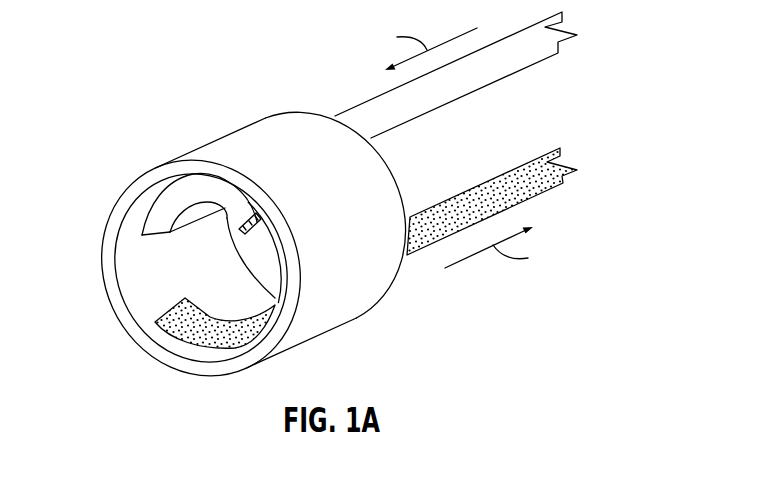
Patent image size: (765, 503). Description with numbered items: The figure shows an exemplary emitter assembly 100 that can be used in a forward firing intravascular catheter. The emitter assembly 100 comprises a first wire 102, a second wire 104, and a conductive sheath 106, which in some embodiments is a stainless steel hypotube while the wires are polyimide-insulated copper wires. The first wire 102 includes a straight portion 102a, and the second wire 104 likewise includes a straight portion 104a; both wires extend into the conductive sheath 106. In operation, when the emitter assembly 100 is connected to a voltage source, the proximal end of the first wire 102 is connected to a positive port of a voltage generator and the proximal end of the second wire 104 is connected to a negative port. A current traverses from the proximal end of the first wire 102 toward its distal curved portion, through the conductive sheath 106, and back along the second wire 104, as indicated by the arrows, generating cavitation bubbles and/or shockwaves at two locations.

The emitter assembly 100 is at (146, 89).
The first wire 102 is at (543, 58).
The straight portion 102a is at (257, 217).
The second wire 104 is at (513, 167).
The straight portion 104a is at (163, 310).
The conductive sheath 106 is at (325, 332).